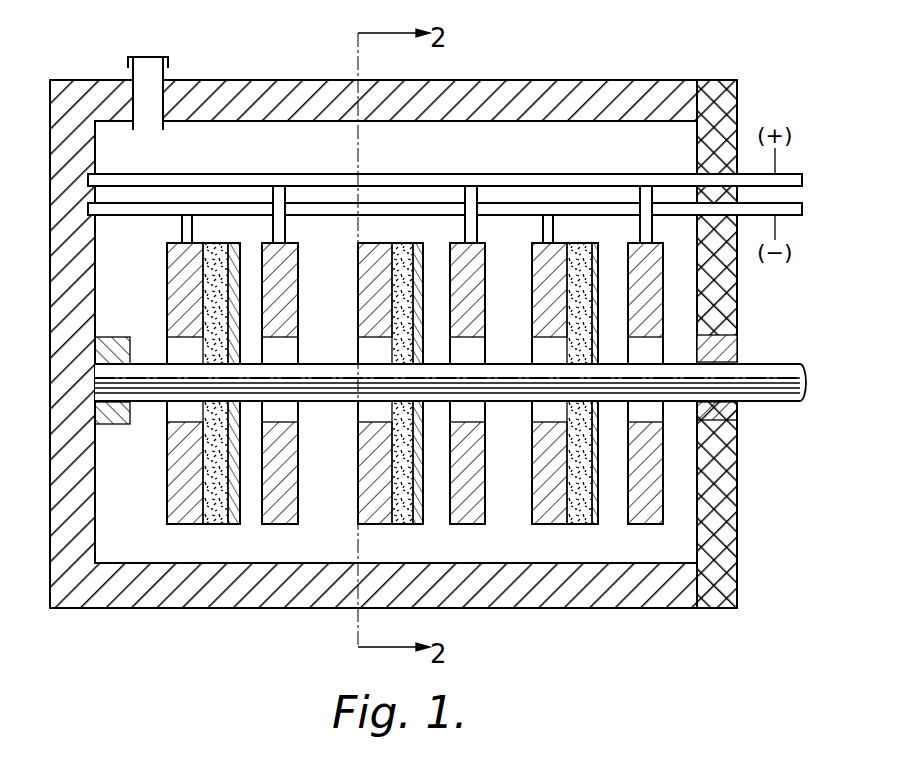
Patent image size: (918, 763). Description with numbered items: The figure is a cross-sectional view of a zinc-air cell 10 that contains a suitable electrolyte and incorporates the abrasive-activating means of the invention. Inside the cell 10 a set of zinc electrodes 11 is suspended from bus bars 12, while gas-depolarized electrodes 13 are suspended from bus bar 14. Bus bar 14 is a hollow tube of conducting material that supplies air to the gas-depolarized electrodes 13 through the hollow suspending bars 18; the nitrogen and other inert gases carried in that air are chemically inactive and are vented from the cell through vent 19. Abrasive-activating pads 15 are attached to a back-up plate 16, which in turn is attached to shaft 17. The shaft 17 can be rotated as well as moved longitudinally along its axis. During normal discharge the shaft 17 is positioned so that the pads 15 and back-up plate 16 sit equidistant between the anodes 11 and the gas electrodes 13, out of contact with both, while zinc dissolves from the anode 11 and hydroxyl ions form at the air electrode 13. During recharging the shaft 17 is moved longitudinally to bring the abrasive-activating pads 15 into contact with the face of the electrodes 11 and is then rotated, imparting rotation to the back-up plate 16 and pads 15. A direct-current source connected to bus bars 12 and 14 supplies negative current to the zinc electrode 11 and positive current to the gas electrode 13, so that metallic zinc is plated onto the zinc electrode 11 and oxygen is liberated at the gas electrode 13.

The cell 10 is at (53, 432).
The zinc electrode 11 is at (168, 524).
The bus bar 12 is at (178, 218).
The gas-depolarized electrode 13 is at (277, 524).
The bus bar 14 is at (194, 180).
The abrasive-activating pad 15 is at (214, 524).
The back-up plate 16 is at (237, 232).
The shaft 17 is at (776, 366).
The hollow suspending bar 18 is at (288, 232).
The vent 19 is at (149, 56).